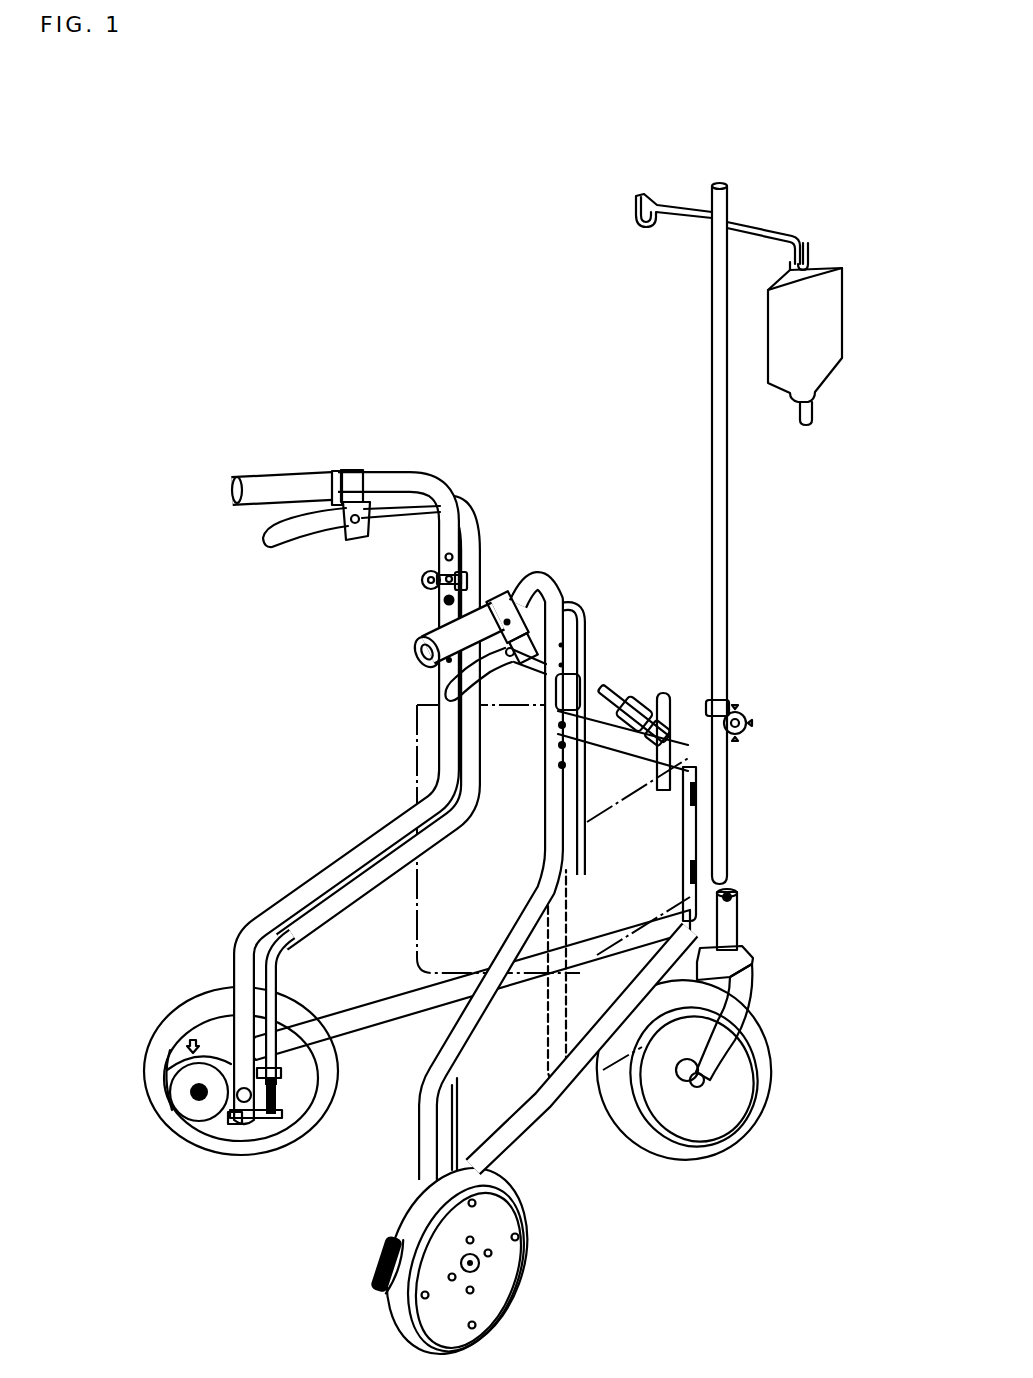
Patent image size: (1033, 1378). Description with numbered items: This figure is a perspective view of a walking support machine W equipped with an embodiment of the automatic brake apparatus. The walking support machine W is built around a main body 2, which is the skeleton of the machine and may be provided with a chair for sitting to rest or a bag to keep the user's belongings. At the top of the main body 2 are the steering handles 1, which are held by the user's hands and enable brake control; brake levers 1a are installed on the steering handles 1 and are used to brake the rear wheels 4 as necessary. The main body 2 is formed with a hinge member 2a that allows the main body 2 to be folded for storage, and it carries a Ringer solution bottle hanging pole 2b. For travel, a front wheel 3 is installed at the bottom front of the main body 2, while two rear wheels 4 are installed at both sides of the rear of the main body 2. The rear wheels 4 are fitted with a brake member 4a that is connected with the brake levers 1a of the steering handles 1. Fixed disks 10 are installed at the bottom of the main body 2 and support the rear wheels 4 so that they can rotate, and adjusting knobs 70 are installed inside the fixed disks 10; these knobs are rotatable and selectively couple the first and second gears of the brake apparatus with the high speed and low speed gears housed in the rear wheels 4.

The walking support machine W is at (468, 410).
The steering handles 1 is at (287, 462).
The brake levers 1a is at (293, 530).
The main body 2 is at (320, 849).
The hinge member 2a is at (636, 695).
The Ringer solution bottle hanging pole 2b is at (735, 738).
The front wheel 3 is at (770, 1050).
The rear wheels 4 is at (170, 1032).
The brake member 4a is at (264, 1120).
The fixed disks 10 is at (218, 1030).
The adjusting knobs 70 is at (205, 1108).